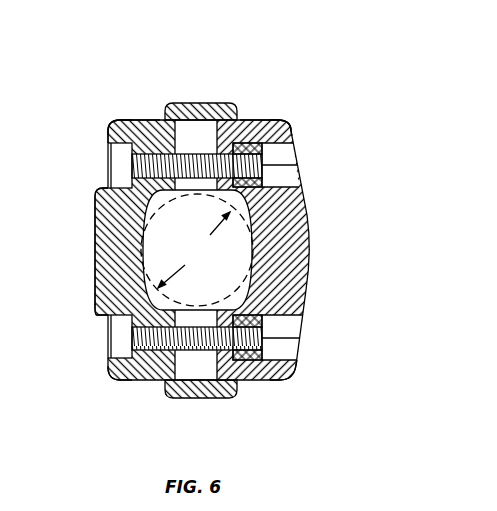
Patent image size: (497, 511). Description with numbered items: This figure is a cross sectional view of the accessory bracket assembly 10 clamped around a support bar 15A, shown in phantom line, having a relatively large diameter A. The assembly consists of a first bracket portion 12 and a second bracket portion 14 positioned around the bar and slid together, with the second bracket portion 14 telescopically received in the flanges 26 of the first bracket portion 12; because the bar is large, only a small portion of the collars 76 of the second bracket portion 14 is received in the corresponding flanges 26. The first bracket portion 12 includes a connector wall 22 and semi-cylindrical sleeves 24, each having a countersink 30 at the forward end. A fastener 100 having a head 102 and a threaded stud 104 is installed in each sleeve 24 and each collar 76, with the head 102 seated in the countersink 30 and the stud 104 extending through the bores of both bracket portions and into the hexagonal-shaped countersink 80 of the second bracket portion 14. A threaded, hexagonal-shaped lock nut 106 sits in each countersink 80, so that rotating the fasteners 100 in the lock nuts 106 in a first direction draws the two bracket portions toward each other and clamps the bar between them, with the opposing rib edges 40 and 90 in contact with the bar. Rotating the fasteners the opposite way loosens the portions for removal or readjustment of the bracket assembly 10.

The accessory bracket assembly 10 is at (142, 57).
The first bracket portion 12 is at (148, 117).
The second bracket portion 14 is at (248, 113).
The support bar 15A is at (152, 247).
The connector wall 22 is at (96, 275).
The semi-cylindrical sleeve 24 is at (130, 120).
The semi-cylindrical flange 26 is at (200, 103).
The countersink 30 is at (101, 186).
The semi-circular edge 40 is at (150, 232).
The collar 76 is at (268, 122).
The hexagonal-shaped countersink 80 is at (283, 153).
The semi-circular edge 90 is at (245, 268).
The fastener 100 is at (100, 147).
The head 102 is at (109, 162).
The threaded stud 104 is at (157, 368).
The lock nut 106 is at (266, 170).
The diameter A is at (194, 250).